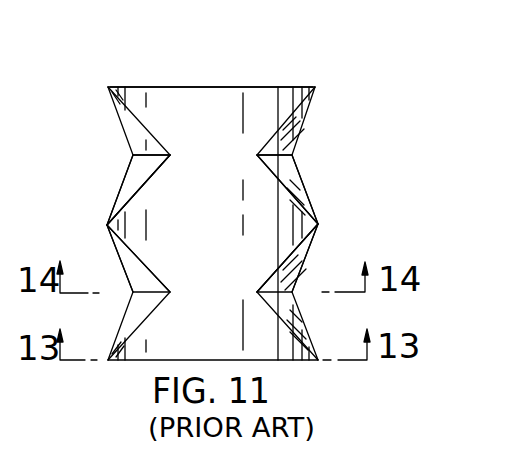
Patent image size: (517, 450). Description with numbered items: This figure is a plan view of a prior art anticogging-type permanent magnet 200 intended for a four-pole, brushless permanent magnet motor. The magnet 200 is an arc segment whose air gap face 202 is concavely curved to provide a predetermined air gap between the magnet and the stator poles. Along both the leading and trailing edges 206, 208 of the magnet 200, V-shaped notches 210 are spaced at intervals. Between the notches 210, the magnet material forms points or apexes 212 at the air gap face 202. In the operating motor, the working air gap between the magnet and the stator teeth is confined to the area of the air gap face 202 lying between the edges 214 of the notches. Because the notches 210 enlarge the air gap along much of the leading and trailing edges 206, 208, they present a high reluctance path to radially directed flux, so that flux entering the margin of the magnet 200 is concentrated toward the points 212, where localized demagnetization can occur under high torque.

The prior art magnet 200 is at (335, 98).
The air gap face 202 is at (180, 103).
The leading edge 206 is at (107, 224).
The trailing edge 208 is at (318, 224).
The V-shaped notches 210 is at (130, 155).
The points or apexes 212 is at (107, 225).
The edges of the notches 214 is at (148, 186).